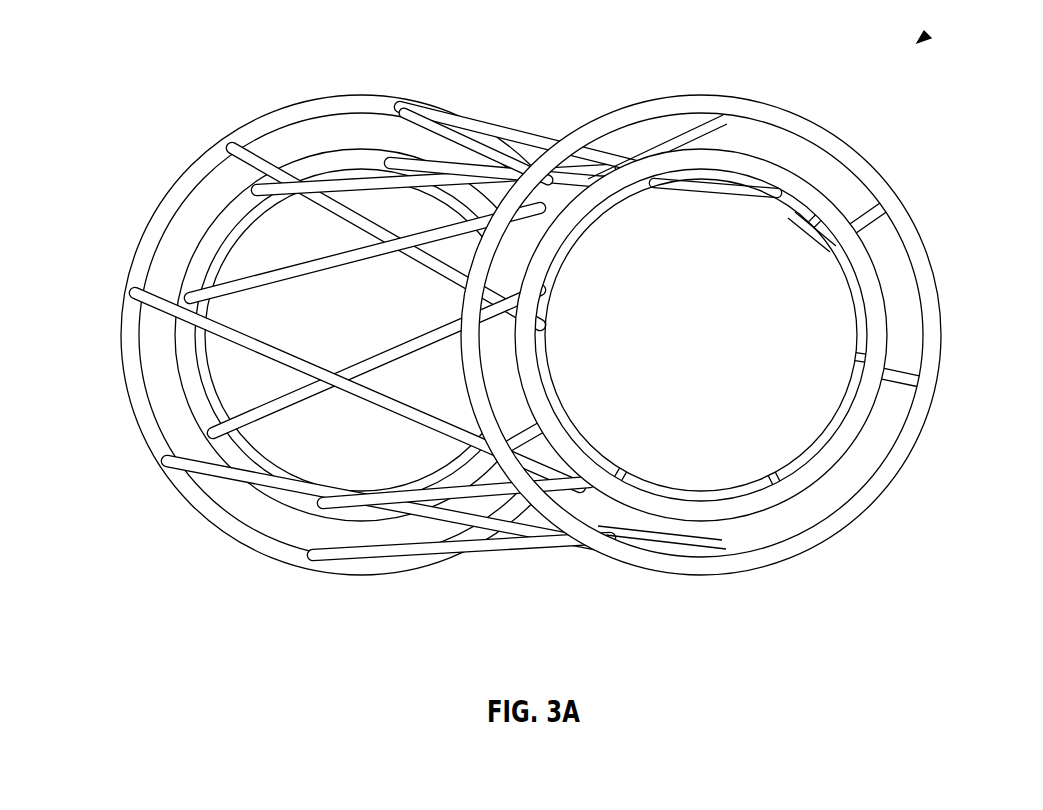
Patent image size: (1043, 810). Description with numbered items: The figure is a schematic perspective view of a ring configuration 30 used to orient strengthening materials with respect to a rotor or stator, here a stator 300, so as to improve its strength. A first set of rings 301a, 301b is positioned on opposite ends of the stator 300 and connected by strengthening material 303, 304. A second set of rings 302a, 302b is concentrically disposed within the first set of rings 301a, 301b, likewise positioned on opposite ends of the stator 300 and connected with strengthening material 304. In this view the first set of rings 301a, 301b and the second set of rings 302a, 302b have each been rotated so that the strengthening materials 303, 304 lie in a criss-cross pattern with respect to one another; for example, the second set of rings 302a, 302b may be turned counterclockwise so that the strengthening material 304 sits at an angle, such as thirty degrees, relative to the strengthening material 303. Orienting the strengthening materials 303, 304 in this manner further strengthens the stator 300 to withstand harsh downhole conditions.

The ring configuration 30 is at (918, 42).
The stator 300 is at (822, 403).
The first set of rings 301a is at (201, 162).
The first set of rings 301b is at (860, 158).
The second set of rings 302a is at (183, 365).
The second set of rings 302b is at (876, 306).
The strengthening material 303 is at (270, 148).
The strengthening material 304 is at (437, 186).